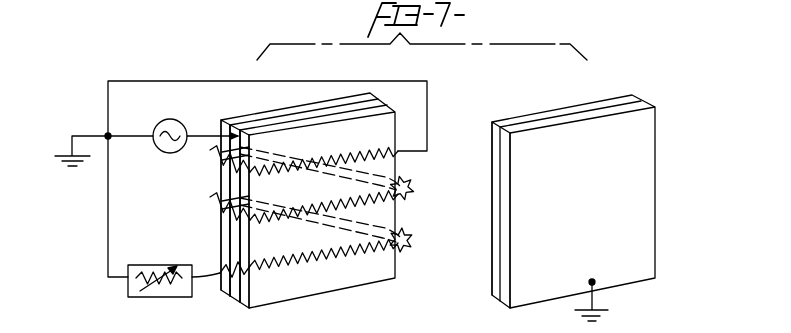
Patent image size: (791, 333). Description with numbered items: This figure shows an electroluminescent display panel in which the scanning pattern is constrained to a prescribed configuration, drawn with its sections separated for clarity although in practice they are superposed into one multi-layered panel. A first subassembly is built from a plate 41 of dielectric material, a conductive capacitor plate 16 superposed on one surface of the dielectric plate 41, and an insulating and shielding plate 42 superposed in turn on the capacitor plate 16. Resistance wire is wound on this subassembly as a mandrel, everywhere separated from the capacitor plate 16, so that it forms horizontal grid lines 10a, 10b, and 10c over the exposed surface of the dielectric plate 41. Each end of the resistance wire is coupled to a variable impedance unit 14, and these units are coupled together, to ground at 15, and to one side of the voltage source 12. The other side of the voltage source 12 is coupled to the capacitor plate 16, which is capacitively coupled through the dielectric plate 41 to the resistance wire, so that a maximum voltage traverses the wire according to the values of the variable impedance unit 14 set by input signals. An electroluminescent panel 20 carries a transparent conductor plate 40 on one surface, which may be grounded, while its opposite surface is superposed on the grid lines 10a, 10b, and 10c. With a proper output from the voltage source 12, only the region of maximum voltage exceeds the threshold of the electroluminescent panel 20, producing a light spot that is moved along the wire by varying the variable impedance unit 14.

The horizontal grid line 10a is at (353, 142).
The horizontal grid line 10b is at (345, 208).
The horizontal grid line 10c is at (308, 253).
The voltage source 12 is at (157, 126).
The variable impedance unit 14 is at (133, 263).
The ground 15 is at (106, 133).
The conductive capacitor plate 16 is at (234, 289).
The electroluminescent panel 20 is at (492, 163).
The transparent conductor plate 40 is at (645, 166).
The dielectric plate 41 is at (238, 295).
The insulating and shielding plate 42 is at (229, 128).